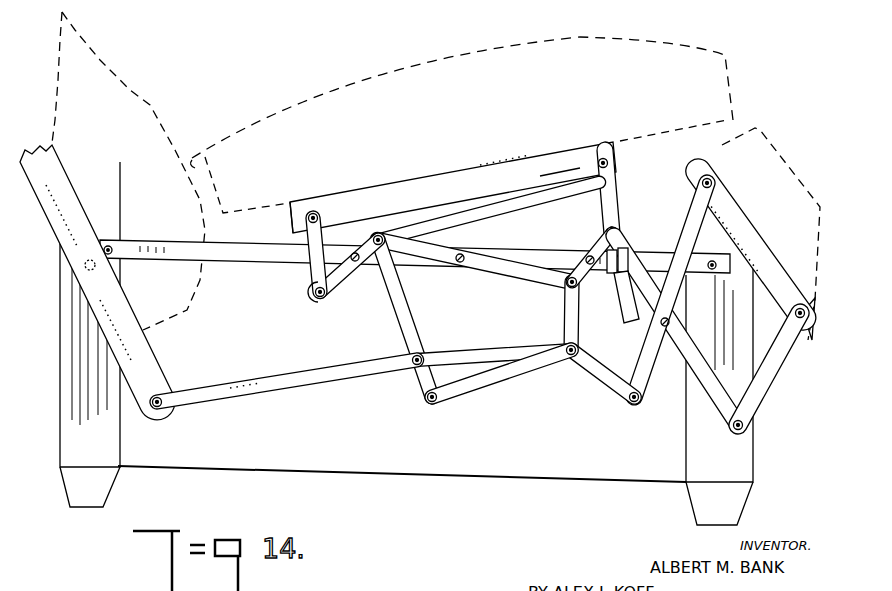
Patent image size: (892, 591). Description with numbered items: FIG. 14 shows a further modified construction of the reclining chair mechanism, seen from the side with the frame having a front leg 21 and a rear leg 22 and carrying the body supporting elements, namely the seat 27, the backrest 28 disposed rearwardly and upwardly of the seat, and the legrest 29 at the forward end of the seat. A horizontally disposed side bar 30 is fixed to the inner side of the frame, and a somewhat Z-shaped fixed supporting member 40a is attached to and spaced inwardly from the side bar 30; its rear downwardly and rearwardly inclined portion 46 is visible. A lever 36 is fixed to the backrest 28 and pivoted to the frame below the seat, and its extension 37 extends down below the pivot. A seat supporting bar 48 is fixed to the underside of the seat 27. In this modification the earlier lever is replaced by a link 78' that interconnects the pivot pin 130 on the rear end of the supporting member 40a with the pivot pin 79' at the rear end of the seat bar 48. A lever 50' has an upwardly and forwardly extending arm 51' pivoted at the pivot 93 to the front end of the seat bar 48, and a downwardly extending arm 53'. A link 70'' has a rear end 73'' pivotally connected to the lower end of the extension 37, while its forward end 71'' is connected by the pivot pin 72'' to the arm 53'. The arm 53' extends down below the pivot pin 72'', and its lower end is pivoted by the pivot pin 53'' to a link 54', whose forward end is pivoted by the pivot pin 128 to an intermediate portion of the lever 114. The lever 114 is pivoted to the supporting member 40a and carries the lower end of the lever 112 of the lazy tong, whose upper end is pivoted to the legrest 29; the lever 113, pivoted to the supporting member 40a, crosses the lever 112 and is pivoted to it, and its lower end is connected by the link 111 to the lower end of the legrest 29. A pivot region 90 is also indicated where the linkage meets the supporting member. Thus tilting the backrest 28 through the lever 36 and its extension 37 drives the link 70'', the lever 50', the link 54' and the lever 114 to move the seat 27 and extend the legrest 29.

The front leg 21 is at (742, 456).
The rear leg 22 is at (60, 400).
The seat 27 is at (478, 48).
The backrest 28 is at (152, 100).
The legrest 29 is at (795, 170).
The side bar 30 is at (256, 261).
The lever 36 is at (112, 282).
The extension 37 is at (150, 380).
The fixed supporting member 40a is at (526, 276).
The rear inclined portion 46 is at (347, 272).
The seat supporting bar 48 is at (450, 178).
The lever 50' is at (489, 211).
The upwardly and forwardly extending arm 51' is at (560, 143).
The downwardly extending arm 53' is at (416, 318).
The pivot pin 53'' is at (490, 385).
The link 54' is at (563, 334).
The link 70'' is at (287, 387).
The forward end 71'' is at (401, 384).
The pivot pin 72'' is at (494, 351).
The rear end 73'' is at (182, 419).
The link 78' is at (334, 249).
The pivot pin 79' is at (271, 217).
The pivot assembly 90 is at (632, 221).
The pivot 93 is at (612, 150).
The link 111 is at (764, 390).
The lever 112 is at (690, 236).
The lever 113 is at (695, 378).
The link or lever 114 is at (614, 390).
The pivot pin 128 is at (580, 350).
The pivot pin 130 is at (312, 298).